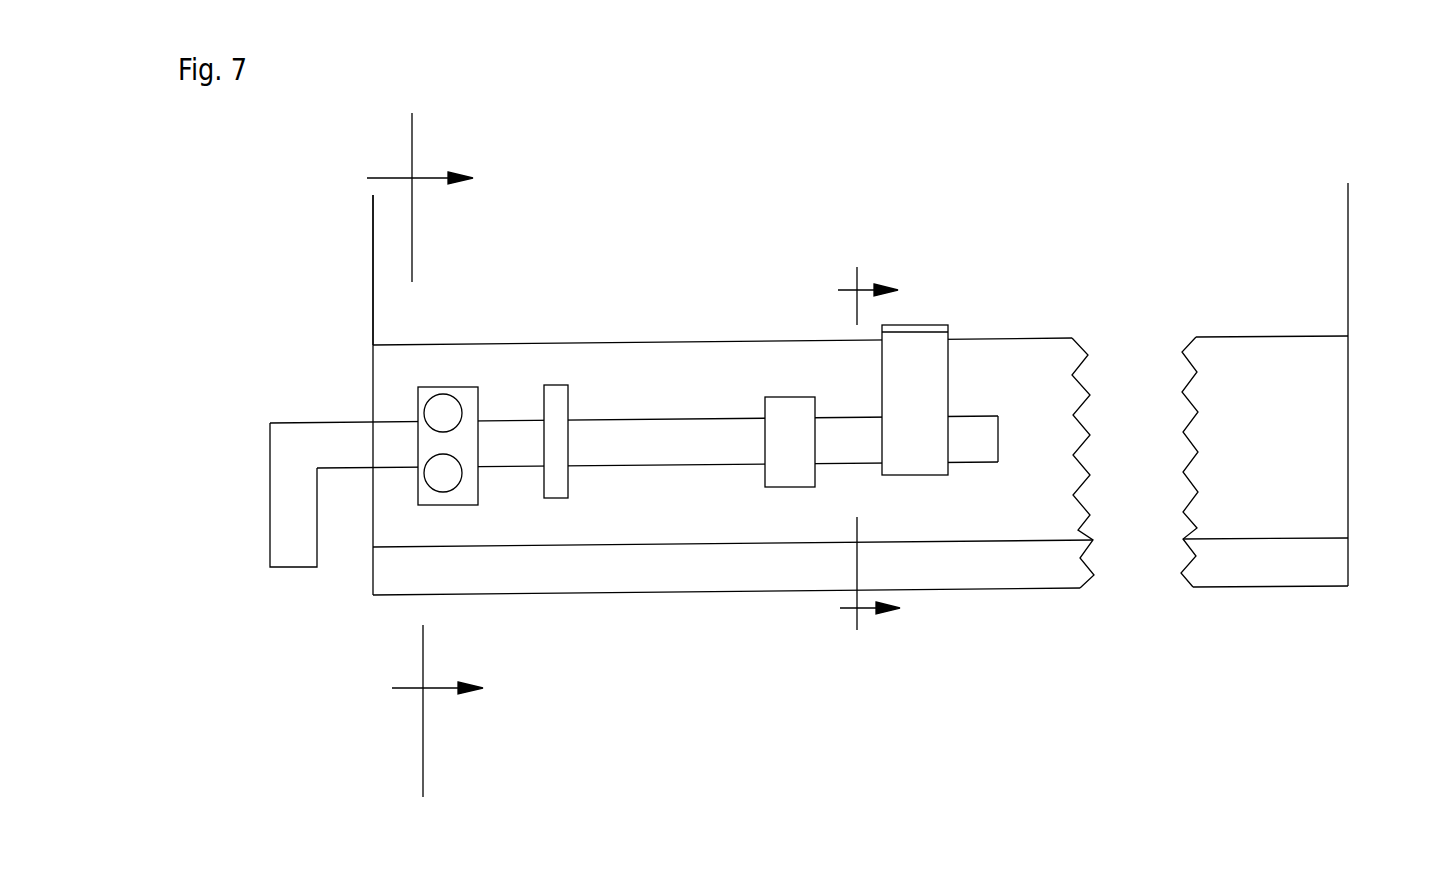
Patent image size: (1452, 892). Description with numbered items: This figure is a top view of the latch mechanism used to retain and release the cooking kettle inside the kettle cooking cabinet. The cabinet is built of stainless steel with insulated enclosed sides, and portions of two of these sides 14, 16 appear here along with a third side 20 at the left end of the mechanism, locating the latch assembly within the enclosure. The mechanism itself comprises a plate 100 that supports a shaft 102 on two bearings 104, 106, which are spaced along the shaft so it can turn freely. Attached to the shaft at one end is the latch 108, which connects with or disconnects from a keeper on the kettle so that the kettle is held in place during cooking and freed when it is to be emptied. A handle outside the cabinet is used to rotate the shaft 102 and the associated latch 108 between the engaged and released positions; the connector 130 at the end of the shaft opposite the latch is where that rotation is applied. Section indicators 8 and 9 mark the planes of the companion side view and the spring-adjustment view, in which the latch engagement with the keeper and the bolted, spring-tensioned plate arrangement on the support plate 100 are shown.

The insulated enclosed side 14 is at (1350, 265).
The insulated enclosed side 16 is at (653, 593).
The insulated enclosed side 20 is at (373, 300).
The plate 100 is at (698, 521).
The shaft 102 is at (633, 422).
The bearing 104 is at (777, 397).
The bearing 106 is at (547, 385).
The latch 108 is at (977, 371).
The bracket 130 is at (272, 527).
The section line 8- 8 is at (880, 448).
The section line 9- 9 is at (439, 455).